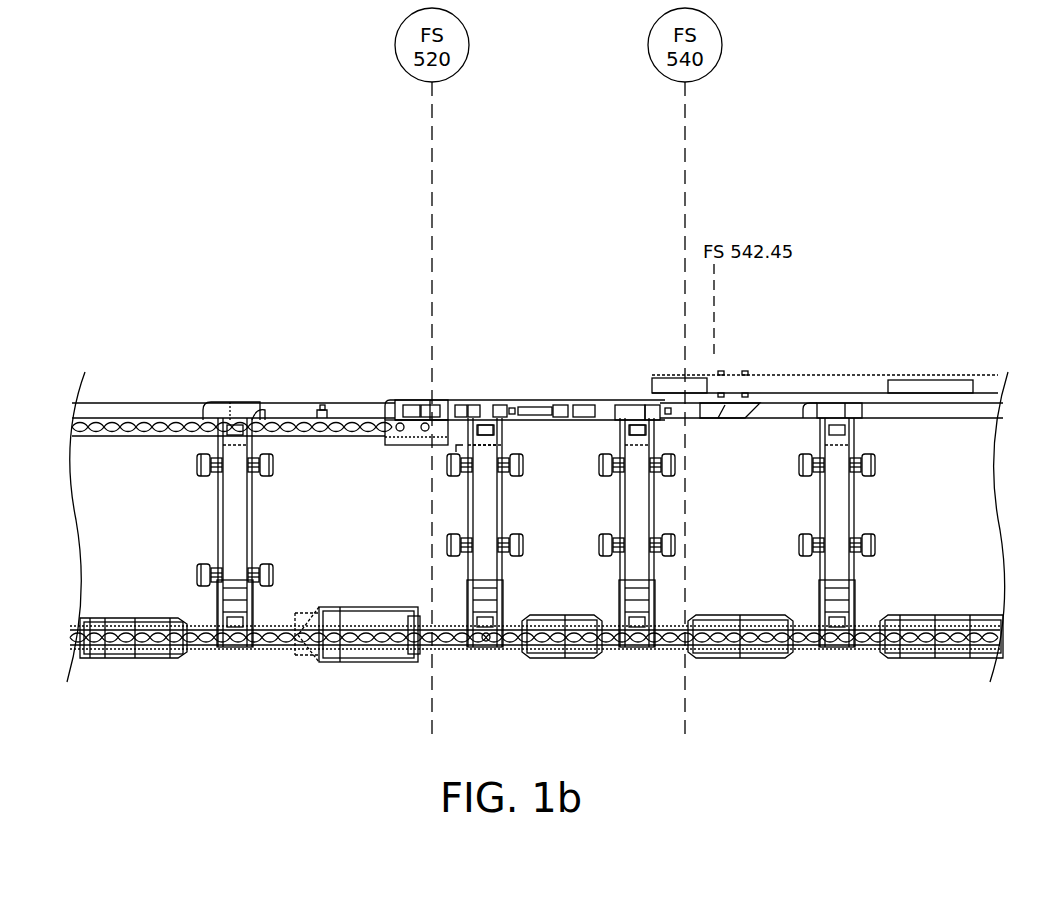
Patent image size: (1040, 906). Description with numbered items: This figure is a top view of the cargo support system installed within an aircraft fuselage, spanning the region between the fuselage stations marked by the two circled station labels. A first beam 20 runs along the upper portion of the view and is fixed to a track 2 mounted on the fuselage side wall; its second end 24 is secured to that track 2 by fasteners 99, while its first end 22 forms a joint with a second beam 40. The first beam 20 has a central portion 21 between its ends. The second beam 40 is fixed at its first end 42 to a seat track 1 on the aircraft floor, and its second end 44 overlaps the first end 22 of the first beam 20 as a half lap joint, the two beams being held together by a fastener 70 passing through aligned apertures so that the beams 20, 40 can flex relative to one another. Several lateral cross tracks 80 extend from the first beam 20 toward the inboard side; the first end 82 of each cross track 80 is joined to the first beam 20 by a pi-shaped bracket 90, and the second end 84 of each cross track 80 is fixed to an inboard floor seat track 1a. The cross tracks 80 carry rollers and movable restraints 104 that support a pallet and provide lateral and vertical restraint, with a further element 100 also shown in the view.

The seat track 1 is at (318, 402).
The seat track 1a is at (293, 652).
The track 2 is at (770, 393).
The first beam 20 is at (535, 400).
The central portion 21 is at (577, 406).
The first end 22 is at (447, 402).
The second end 24 is at (732, 413).
The second beam 40 is at (415, 445).
The first end 42 is at (386, 432).
The second end 44 is at (433, 402).
The fastener 70 is at (420, 400).
The cross track 80 is at (505, 512).
The first end 82 is at (455, 445).
The second end 84 is at (460, 645).
The bracket 90 is at (500, 430).
The fasteners 99 is at (383, 408).
The fastening bracket 100 is at (493, 404).
The movable restraints 104 is at (523, 545).